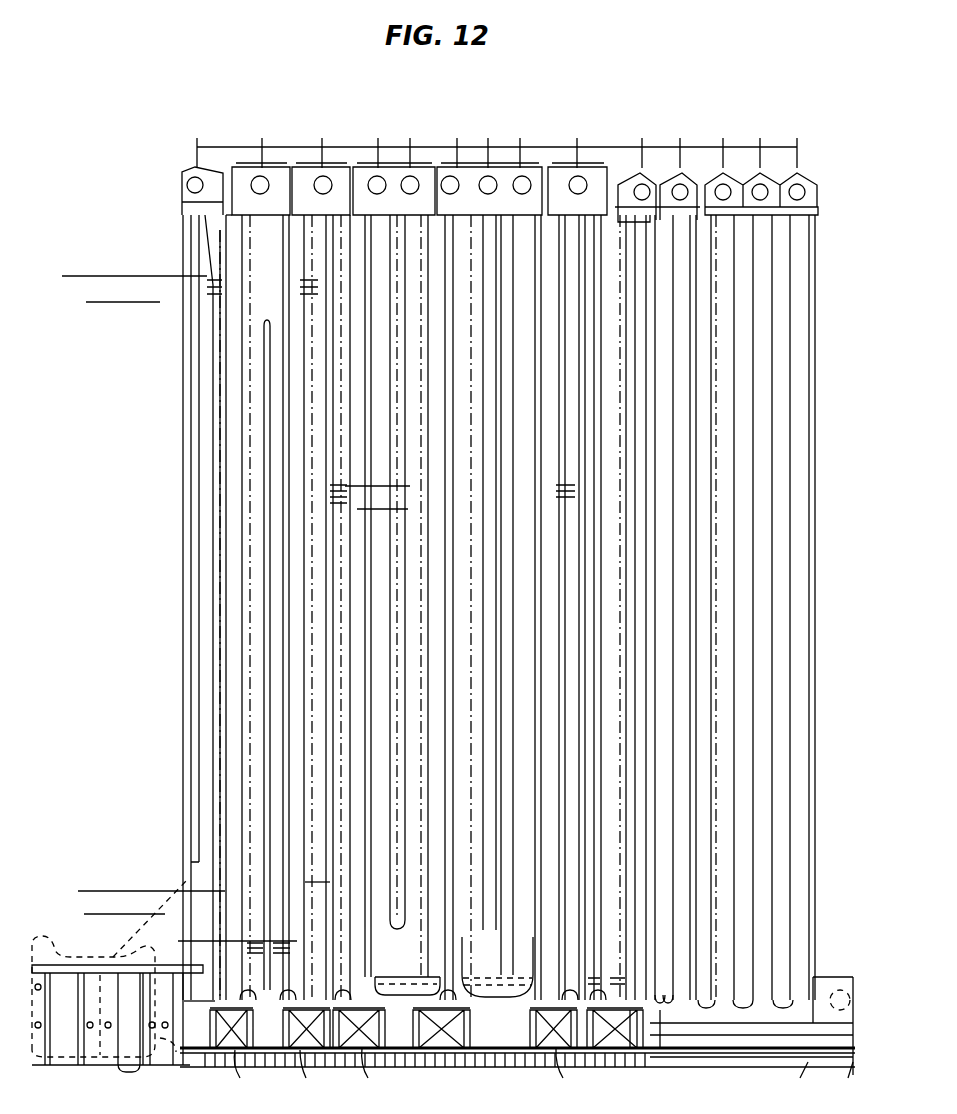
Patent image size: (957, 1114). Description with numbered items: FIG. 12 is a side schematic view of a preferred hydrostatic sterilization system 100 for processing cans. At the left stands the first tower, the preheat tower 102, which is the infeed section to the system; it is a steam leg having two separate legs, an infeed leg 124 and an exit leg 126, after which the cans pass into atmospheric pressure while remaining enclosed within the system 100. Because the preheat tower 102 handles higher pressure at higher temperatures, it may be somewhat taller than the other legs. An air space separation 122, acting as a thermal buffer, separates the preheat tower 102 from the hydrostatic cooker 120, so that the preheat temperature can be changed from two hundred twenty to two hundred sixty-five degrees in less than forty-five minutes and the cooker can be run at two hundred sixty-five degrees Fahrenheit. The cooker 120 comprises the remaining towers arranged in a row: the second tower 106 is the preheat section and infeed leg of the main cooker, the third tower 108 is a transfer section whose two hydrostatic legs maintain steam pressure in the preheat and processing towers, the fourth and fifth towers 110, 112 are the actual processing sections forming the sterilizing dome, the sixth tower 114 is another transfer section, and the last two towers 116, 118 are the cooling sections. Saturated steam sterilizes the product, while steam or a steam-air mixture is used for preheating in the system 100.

The system 100 is at (135, 500).
The preheat tower 102 is at (197, 135).
The second tower 106 is at (262, 135).
The third tower 108 is at (322, 135).
The fourth tower 110 is at (392, 110).
The fifth tower 112 is at (488, 110).
The sixth tower 114 is at (577, 135).
The seventh tower 116 is at (642, 130).
The eighth tower 118 is at (760, 120).
The hydrostatic cooker 120 is at (585, 52).
The air space separation 122 is at (232, 212).
The infeed leg 124 is at (185, 602).
The exit leg 126 is at (215, 630).